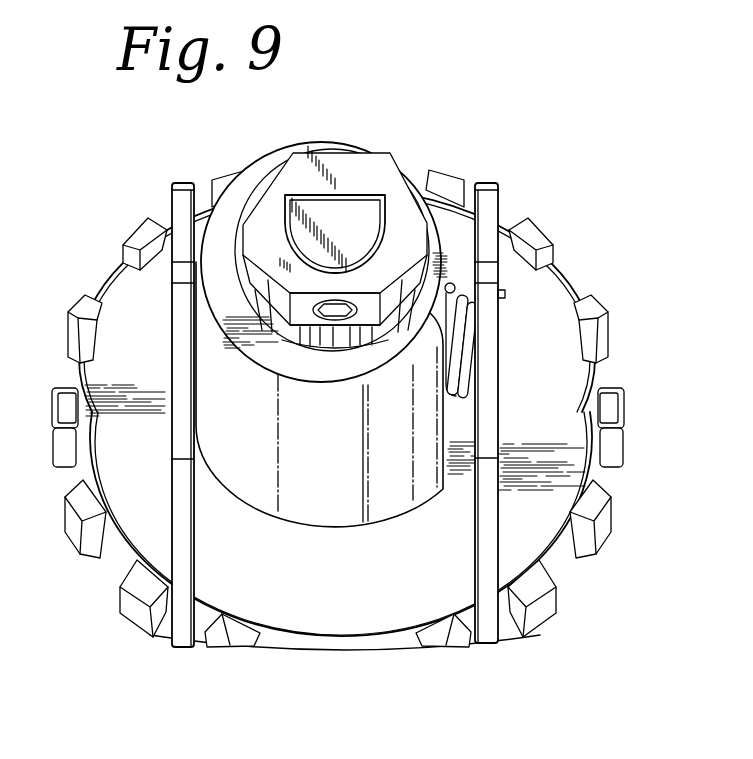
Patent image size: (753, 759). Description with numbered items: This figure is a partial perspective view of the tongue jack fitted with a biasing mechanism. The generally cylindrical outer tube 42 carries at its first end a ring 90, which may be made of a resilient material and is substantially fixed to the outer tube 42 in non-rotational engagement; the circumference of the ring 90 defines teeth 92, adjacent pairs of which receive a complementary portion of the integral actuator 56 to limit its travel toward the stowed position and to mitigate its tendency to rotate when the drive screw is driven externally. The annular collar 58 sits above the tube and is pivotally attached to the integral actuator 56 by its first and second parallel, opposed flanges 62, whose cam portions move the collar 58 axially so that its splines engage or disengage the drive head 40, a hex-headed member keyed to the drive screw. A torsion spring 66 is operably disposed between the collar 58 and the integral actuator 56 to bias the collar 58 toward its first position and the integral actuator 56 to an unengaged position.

The drive head 40 is at (364, 175).
The outer tube 42 is at (563, 600).
The integral actuator 56 is at (176, 656).
The collar 58 is at (340, 456).
The flanges 62 is at (178, 197).
The torsion spring 66 is at (470, 292).
The ring 90 is at (598, 377).
The teeth 92 is at (603, 517).